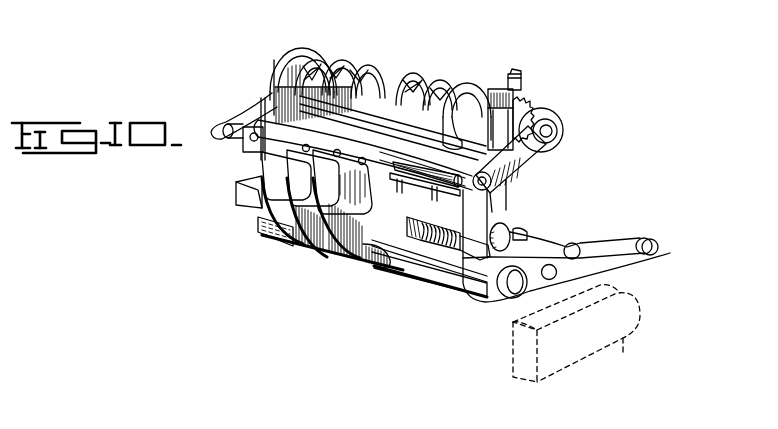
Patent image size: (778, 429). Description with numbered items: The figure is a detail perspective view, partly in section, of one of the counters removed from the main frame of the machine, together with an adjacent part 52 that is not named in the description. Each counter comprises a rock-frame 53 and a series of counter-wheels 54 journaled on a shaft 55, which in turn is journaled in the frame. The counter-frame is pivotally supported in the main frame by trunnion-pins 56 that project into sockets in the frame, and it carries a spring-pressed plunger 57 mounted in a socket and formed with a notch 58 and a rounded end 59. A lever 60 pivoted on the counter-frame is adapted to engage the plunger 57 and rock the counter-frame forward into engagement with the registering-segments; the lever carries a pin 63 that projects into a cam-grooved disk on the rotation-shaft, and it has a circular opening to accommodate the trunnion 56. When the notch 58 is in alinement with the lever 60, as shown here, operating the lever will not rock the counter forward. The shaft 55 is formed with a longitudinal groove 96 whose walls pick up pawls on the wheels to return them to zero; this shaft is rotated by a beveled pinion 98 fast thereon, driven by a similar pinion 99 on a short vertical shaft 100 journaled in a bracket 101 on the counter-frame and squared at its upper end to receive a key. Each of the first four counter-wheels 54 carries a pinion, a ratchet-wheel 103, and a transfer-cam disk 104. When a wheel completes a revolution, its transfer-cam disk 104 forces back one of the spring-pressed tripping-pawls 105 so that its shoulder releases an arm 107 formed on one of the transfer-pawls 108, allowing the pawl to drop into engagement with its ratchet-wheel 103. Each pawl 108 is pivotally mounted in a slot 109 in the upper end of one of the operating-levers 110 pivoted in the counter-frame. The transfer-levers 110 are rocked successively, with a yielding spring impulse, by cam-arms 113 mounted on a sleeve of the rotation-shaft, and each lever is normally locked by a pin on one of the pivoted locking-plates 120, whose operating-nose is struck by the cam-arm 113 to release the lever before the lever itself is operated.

The lower rail 52 is at (420, 270).
The counter-frame 53 is at (520, 172).
The counter-wheels 54 is at (438, 86).
The shaft 55 is at (553, 128).
The trunnion-pins 56 is at (567, 292).
The spring-pressed plunger 57 is at (447, 280).
The notch 58 is at (469, 290).
The rounded end 59 is at (530, 286).
The lever 60 is at (618, 244).
The pin 63 is at (663, 246).
The longitudinal groove 96 is at (553, 120).
The beveled pinion 98 is at (550, 104).
The pinion 99 is at (536, 102).
The short vertical shaft 100 is at (515, 72).
The bracket 101 is at (497, 88).
The ratchet-wheel 103 is at (425, 63).
The transfer-cam disk 104 is at (481, 94).
The tripping-pawls 105 is at (423, 181).
The arm 107 is at (420, 158).
The transfer-pawls 108 is at (270, 95).
The slot 109 is at (315, 190).
The operating-levers 110 is at (322, 250).
The cam-arms 113 is at (545, 232).
The locking-plates 120 is at (520, 212).